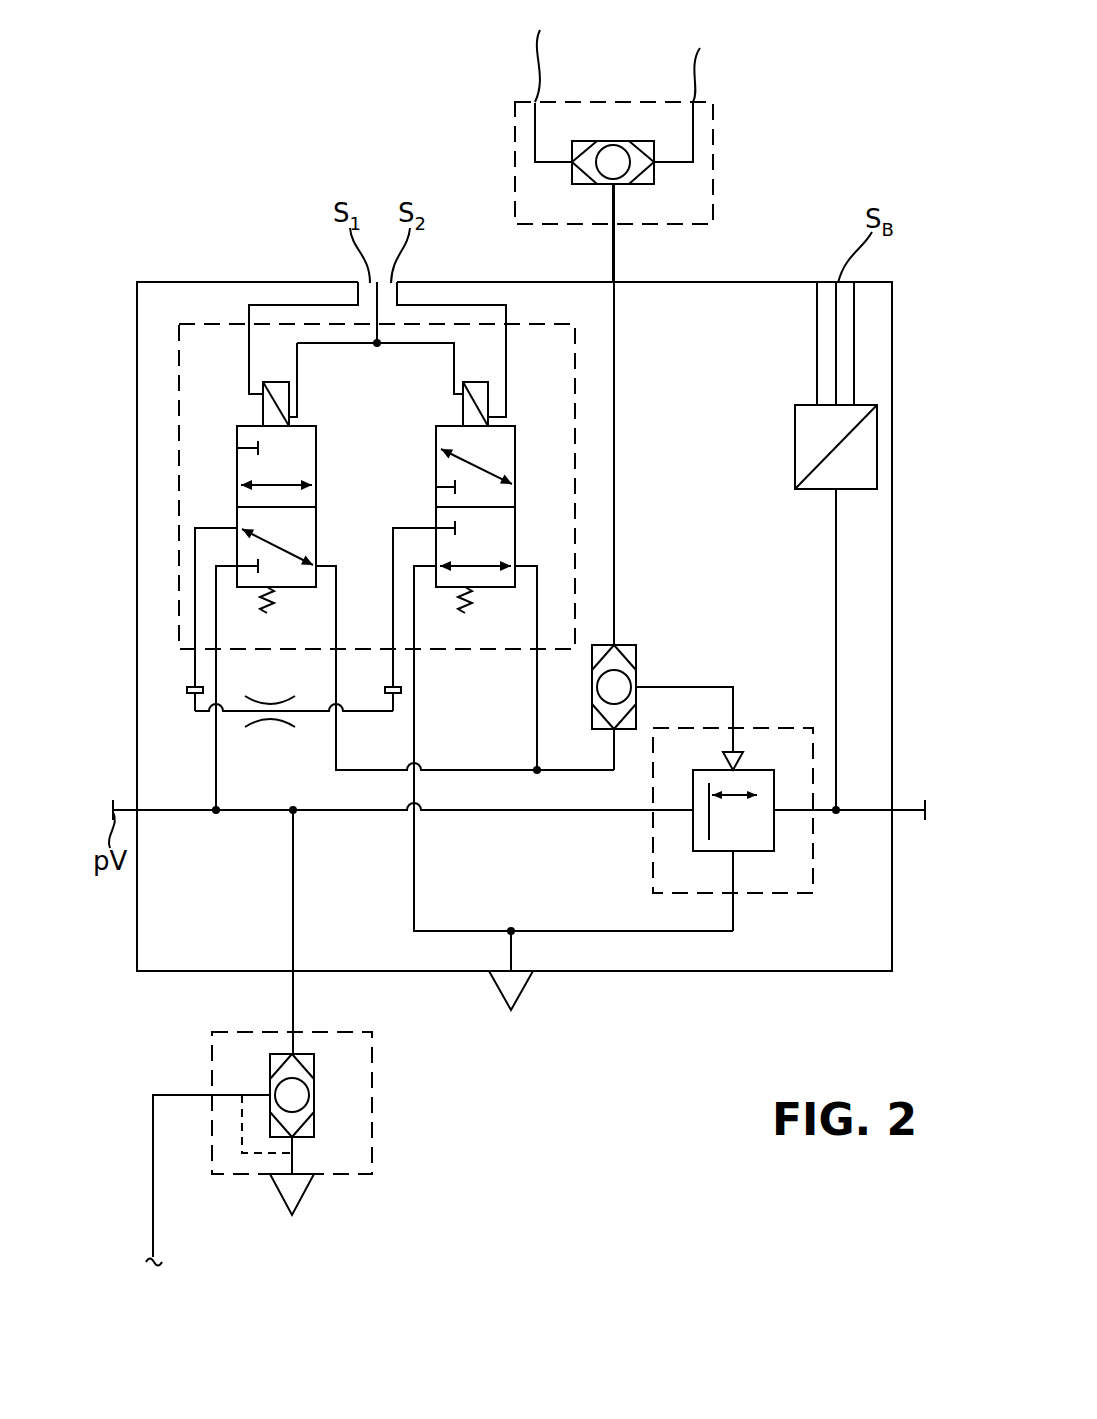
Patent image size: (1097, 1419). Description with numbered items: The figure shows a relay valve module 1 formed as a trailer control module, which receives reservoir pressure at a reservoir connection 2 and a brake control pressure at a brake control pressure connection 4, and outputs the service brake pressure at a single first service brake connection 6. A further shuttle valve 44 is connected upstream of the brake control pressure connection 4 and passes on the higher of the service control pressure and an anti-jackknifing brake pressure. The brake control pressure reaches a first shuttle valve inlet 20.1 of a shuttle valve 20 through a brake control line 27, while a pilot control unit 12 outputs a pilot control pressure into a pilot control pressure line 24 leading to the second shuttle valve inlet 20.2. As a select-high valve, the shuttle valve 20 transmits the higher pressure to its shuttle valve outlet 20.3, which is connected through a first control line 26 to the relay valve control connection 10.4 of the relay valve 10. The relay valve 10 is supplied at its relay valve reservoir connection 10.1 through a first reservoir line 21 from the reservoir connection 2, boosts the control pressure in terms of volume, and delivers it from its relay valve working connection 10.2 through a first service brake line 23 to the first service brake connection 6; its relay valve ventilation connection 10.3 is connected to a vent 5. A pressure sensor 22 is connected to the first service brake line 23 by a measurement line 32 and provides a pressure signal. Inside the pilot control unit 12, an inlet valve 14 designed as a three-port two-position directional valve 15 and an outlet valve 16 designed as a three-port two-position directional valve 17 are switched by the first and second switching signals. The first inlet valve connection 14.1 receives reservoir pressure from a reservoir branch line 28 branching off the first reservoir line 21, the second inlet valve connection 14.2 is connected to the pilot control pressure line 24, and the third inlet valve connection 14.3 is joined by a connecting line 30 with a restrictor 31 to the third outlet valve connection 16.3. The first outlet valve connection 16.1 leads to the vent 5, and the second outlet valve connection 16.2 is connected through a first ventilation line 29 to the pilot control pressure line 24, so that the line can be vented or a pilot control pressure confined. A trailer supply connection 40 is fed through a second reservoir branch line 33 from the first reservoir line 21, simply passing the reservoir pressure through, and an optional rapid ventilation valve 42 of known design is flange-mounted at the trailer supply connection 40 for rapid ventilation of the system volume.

The relay valve module 1 is at (200, 208).
The reservoir connection 2 is at (137, 810).
The brake control pressure connection 4 is at (660, 260).
The vent 5 is at (511, 1012).
The first service brake connection 6 is at (925, 808).
The relay valve 10 is at (699, 793).
The relay valve reservoir connection 10.1 is at (691, 812).
The relay valve working connection 10.2 is at (774, 800).
The relay valve ventilation connection 10.3 is at (733, 858).
The relay valve control connection 10.4 is at (728, 752).
The pilot control unit 12 is at (172, 348).
The inlet valve 14 is at (305, 488).
The 3/2 directional valve 15 is at (276, 404).
The first inlet valve connection 14.1 is at (237, 566).
The second inlet valve connection 14.2 is at (316, 566).
The third inlet valve connection 14.3 is at (232, 528).
The outlet valve 16 is at (437, 497).
The 3/2 directional valve 17 is at (475, 404).
The first outlet valve connection 16.1 is at (436, 566).
The second outlet valve connection 16.2 is at (515, 566).
The third outlet valve connection 16.3 is at (436, 528).
The shuttle valve 20 is at (637, 670).
The first shuttle valve inlet 20.1 is at (615, 645).
The second shuttle valve inlet 20.2 is at (560, 790).
The shuttle valve outlet 20.3 is at (614, 745).
The first reservoir line 21 is at (320, 812).
The pressure sensor 22 is at (877, 440).
The first service brake line 23 is at (836, 814).
The pilot control pressure line 24 is at (445, 755).
The first control line 26 is at (668, 687).
The brake control line 27 is at (617, 408).
The reservoir branch line 28 is at (216, 766).
The first ventilation line 29 is at (537, 710).
The connecting line 30 is at (195, 711).
The restrictor 31 is at (270, 727).
The measurement line 32 is at (838, 592).
The second reservoir branch line 33 is at (295, 930).
The trailer supply connection 40 is at (295, 975).
The rapid ventilation valve 42 is at (372, 1102).
The further shuttle valve 44 is at (613, 141).